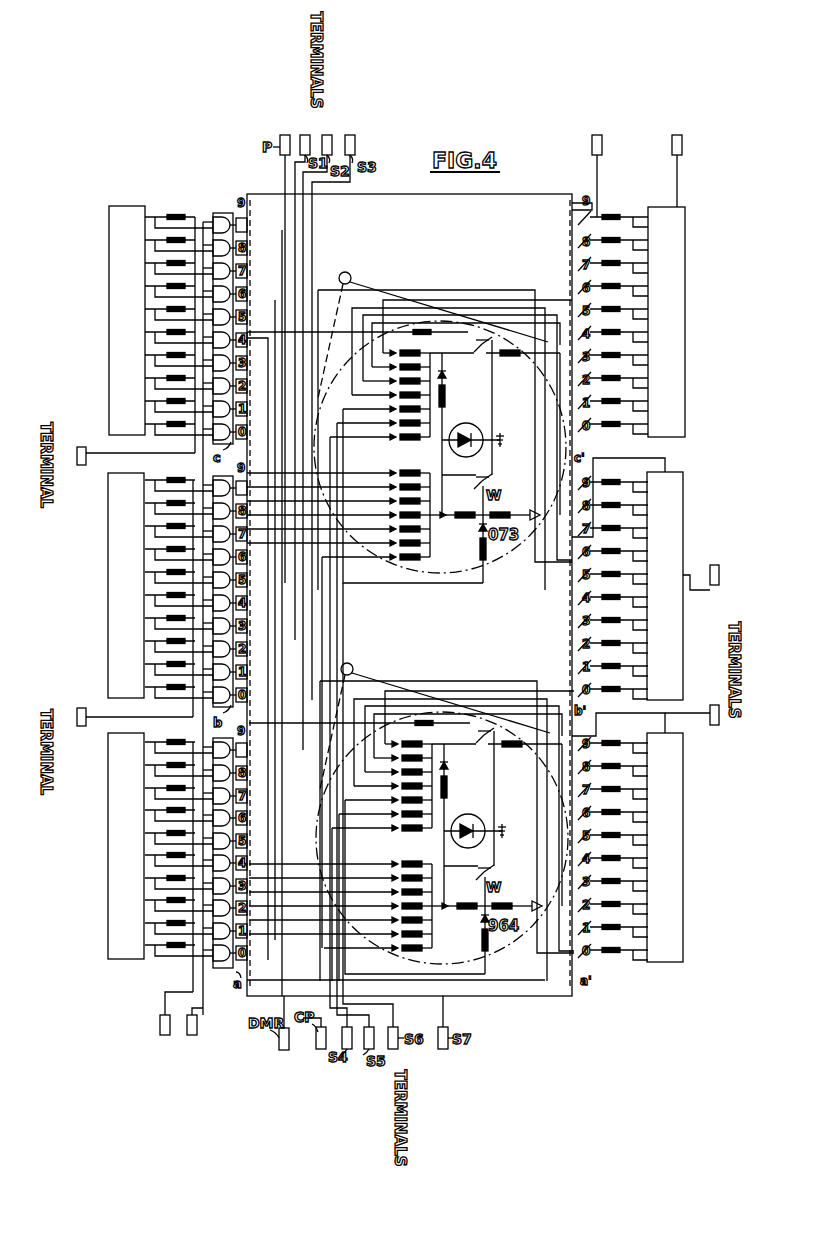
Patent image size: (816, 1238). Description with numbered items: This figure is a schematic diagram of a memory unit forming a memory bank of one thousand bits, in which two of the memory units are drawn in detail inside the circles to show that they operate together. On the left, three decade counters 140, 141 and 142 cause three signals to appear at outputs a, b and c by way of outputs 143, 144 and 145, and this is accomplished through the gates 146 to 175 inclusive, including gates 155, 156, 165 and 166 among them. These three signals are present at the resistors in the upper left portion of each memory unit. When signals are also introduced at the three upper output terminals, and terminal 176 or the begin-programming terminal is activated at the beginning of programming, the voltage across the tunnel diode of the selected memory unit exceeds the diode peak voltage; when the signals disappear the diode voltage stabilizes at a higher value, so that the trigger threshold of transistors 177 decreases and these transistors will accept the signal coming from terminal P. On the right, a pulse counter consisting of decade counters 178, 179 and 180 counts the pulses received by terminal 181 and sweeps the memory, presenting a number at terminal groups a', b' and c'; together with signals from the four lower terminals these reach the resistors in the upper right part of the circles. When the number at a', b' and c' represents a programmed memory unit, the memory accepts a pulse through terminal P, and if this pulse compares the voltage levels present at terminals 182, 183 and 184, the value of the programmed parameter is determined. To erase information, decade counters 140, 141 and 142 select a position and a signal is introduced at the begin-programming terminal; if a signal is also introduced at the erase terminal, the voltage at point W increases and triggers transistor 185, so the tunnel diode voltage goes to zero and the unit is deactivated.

The decade counter 140 is at (126, 846).
The decade counter 141 is at (126, 585).
The decade counter 142 is at (127, 320).
The output 143 is at (199, 1021).
The output 144 is at (81, 726).
The output 145 is at (81, 465).
The gate 146 is at (233, 974).
The gate 155 is at (158, 869).
The gate 156 is at (232, 696).
The gate 165 is at (158, 594).
The gate 166 is at (240, 197).
The gate 175 is at (196, 293).
The terminal 176 is at (160, 1021).
The transistor 177 is at (478, 352).
The decade counter 178 is at (665, 847).
The decade counter 179 is at (665, 586).
The decade counter 180 is at (666, 322).
The terminal 181 is at (672, 147).
The terminal 182 is at (592, 147).
The terminal 183 is at (714, 585).
The terminal 184 is at (714, 725).
The transistor 185 is at (476, 483).